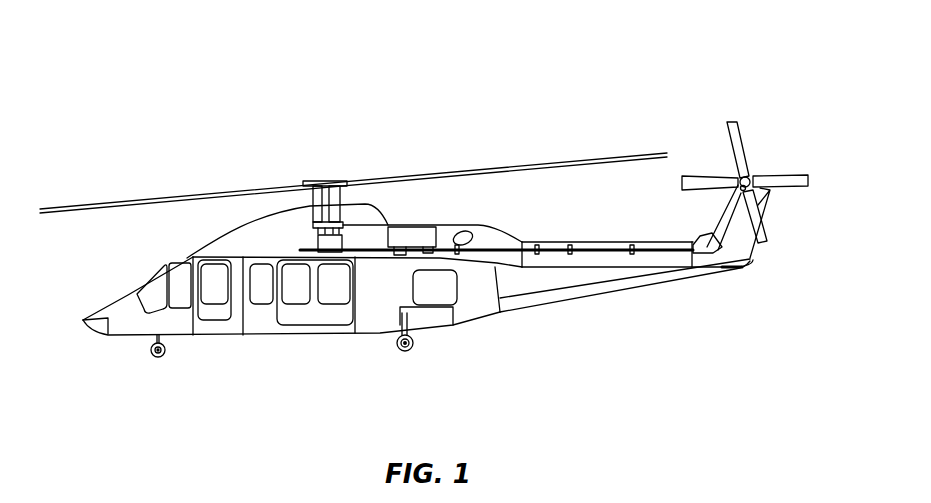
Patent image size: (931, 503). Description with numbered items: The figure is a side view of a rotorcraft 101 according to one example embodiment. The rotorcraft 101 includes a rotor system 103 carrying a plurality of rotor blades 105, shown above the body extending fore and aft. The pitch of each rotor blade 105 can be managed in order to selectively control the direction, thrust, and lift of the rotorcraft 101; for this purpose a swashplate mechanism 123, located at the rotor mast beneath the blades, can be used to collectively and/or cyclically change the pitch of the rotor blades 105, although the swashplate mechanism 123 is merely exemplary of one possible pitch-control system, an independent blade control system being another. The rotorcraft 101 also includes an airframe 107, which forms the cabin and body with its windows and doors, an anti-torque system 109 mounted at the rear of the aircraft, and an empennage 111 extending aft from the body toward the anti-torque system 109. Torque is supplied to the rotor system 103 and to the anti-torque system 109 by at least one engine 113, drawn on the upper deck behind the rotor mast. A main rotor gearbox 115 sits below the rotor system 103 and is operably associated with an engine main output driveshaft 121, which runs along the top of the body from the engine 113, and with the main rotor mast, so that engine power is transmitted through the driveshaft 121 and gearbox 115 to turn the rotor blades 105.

The rotorcraft 101 is at (238, 95).
The rotor system 103 is at (353, 168).
The rotor blades 105 is at (543, 164).
The airframe 107 is at (259, 335).
The anti-torque system 109 is at (767, 161).
The empennage 111 is at (614, 294).
The engine 113 is at (398, 228).
The main rotor gearbox 115 is at (318, 249).
The engine main output driveshaft 121 is at (380, 252).
The swashplate mechanism 123 is at (348, 217).